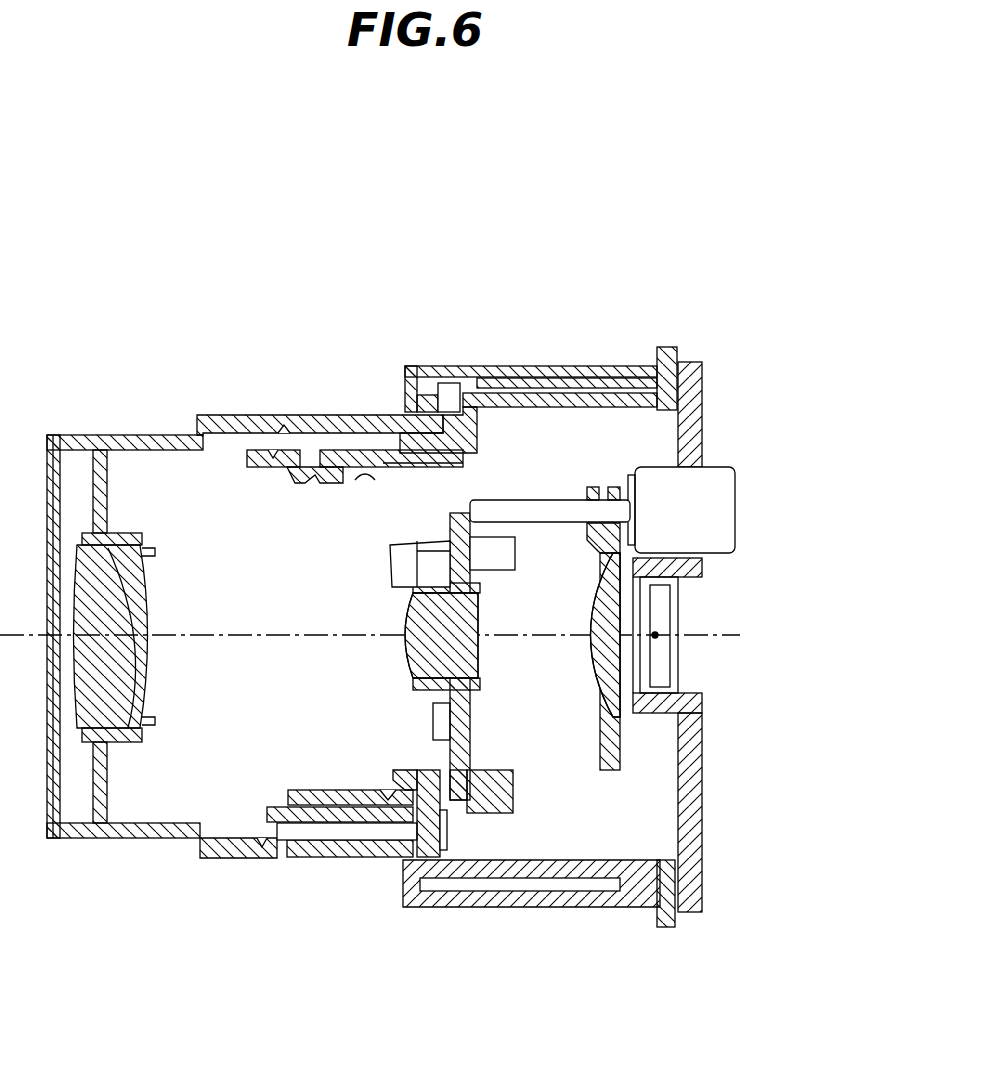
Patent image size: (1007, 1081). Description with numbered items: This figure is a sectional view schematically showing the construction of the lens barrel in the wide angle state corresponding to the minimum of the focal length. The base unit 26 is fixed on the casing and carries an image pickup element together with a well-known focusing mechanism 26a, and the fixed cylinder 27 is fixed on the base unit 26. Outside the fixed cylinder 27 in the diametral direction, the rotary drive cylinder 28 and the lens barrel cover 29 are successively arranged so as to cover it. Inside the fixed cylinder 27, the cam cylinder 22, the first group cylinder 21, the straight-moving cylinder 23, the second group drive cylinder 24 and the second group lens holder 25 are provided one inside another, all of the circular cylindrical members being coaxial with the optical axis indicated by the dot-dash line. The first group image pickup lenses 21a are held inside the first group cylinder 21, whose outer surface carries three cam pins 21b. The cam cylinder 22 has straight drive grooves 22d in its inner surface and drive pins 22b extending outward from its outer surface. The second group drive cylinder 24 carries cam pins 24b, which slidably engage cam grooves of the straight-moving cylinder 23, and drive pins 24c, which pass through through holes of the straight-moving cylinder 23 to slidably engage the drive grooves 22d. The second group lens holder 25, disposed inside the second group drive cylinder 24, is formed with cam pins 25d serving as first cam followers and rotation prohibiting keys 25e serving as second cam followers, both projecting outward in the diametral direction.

The first group cylinder 21 is at (150, 437).
The first group image pickup lenses 21a is at (143, 740).
The cam pins 21b is at (212, 862).
The cam cylinder 22 is at (265, 415).
The drive pins 22b is at (440, 405).
The drive grooves 22d is at (318, 842).
The straight-moving cylinder 23 is at (378, 452).
The second group drive cylinder 24 is at (368, 858).
The cam pins 24b is at (416, 862).
The drive pins 24c is at (442, 824).
The second group lens holder 25 is at (470, 713).
The cam pins 25d is at (405, 790).
The rotation prohibiting keys 25e is at (458, 775).
The base unit 26 is at (705, 365).
The focusing mechanism 26a is at (738, 475).
The fixed cylinder 27 is at (592, 393).
The rotary drive cylinder 28 is at (515, 375).
The lens barrel cover 29 is at (450, 390).